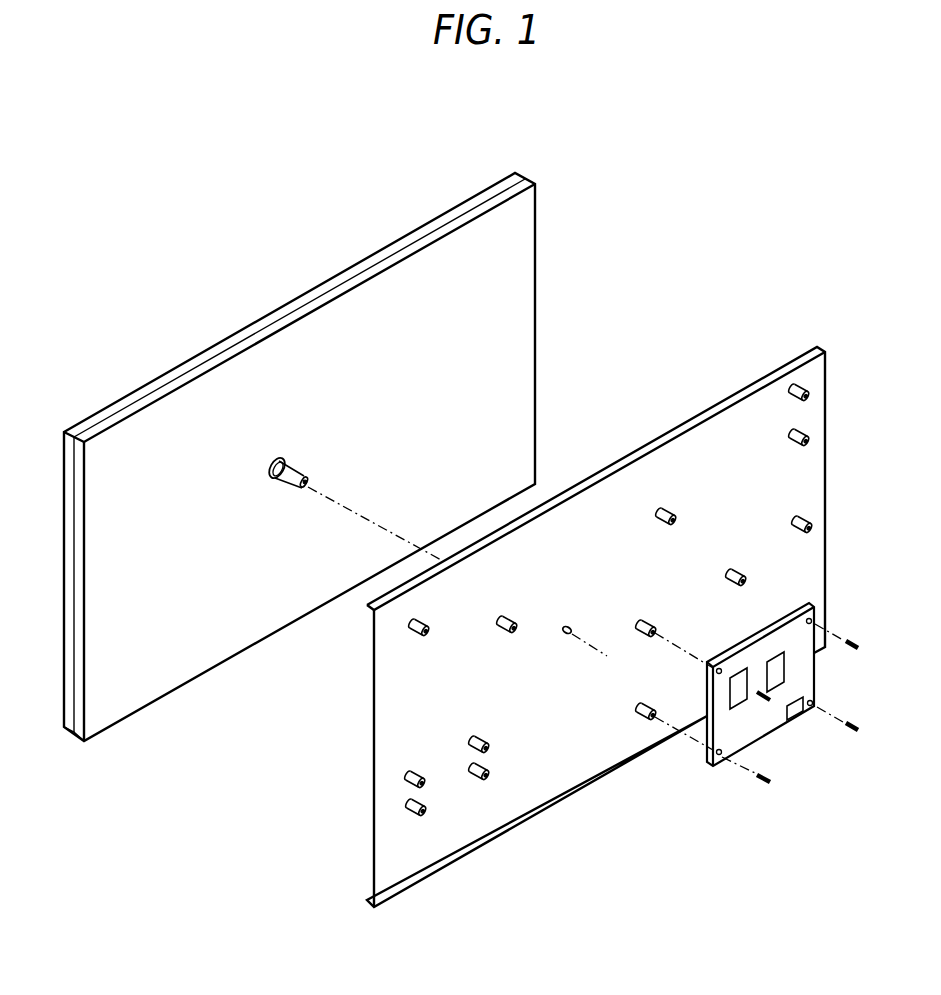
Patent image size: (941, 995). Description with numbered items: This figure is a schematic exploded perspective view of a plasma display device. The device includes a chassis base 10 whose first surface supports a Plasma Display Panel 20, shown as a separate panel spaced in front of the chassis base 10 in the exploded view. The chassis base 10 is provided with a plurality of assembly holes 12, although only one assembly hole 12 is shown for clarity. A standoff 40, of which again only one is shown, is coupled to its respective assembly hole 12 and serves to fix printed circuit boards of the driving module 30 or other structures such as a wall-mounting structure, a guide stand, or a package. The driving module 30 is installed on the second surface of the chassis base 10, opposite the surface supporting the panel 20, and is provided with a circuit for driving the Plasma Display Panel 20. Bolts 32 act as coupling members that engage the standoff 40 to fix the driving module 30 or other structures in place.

The chassis base 10 is at (818, 557).
The assembly hole 12 is at (569, 627).
The Plasma Display Panel (PDP) 20 is at (521, 236).
The driving module 30 is at (722, 733).
The bolt 32 is at (860, 651).
The standoff 40 is at (296, 462).